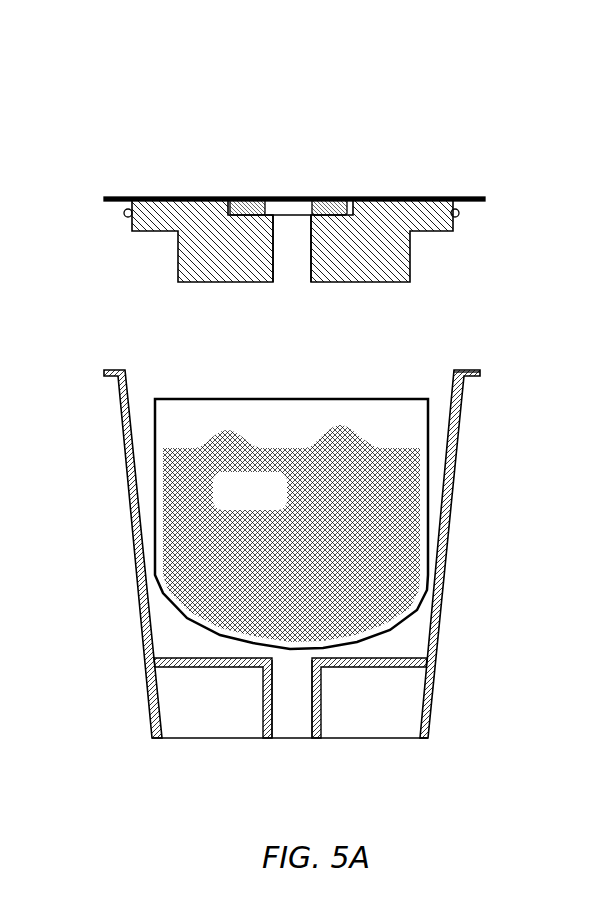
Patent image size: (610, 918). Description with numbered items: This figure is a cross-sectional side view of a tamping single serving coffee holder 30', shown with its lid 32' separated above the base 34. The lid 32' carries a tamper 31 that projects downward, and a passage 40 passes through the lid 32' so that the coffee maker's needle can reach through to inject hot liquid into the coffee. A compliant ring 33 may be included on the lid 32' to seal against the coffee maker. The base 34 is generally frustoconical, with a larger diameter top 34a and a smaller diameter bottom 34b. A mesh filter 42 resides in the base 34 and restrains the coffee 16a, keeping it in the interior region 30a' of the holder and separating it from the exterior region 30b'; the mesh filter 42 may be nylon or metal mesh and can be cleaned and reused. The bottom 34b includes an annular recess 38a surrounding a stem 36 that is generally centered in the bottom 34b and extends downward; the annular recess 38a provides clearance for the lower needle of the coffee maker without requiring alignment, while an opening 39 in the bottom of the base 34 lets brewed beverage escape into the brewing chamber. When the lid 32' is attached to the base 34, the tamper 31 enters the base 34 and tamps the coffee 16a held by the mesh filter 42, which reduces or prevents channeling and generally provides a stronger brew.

The tamping single serving coffee holder 30' is at (311, 153).
The lid 32' is at (311, 164).
The tamper 31 is at (430, 236).
The compliant ring 33 is at (240, 197).
The passage 40 is at (298, 220).
The exterior region 30b' is at (305, 553).
The base 34 is at (447, 555).
The top 34a is at (458, 396).
The bottom 34b is at (432, 730).
The annular recess 38a is at (206, 730).
The stem 36 is at (321, 712).
The opening 39 is at (285, 695).
The interior region 30a' is at (316, 473).
The coffee 16a is at (291, 533).
The mesh filter 42 is at (432, 588).